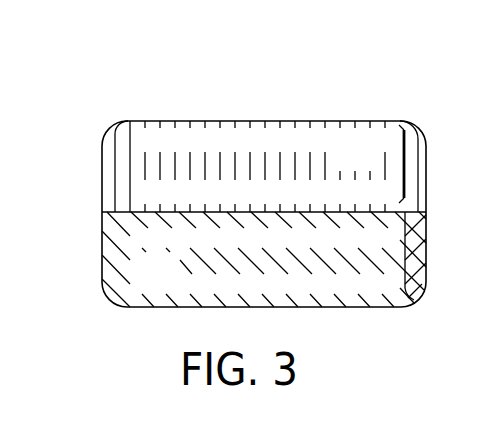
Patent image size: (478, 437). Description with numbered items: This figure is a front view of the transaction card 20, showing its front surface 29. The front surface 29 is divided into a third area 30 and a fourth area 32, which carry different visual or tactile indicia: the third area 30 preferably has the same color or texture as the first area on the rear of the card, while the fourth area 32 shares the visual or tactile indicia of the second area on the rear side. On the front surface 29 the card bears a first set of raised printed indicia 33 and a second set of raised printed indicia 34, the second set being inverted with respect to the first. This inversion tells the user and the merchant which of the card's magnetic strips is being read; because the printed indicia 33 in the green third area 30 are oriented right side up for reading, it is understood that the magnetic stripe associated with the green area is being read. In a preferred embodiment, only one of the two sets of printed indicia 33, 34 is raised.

The transaction card 20 is at (111, 108).
The front surface 29 is at (122, 185).
The third area 30 is at (107, 252).
The fourth area 32 is at (399, 126).
The first set of raised printed indicia 33 is at (404, 273).
The second set of raised printed indicia 34 is at (413, 167).